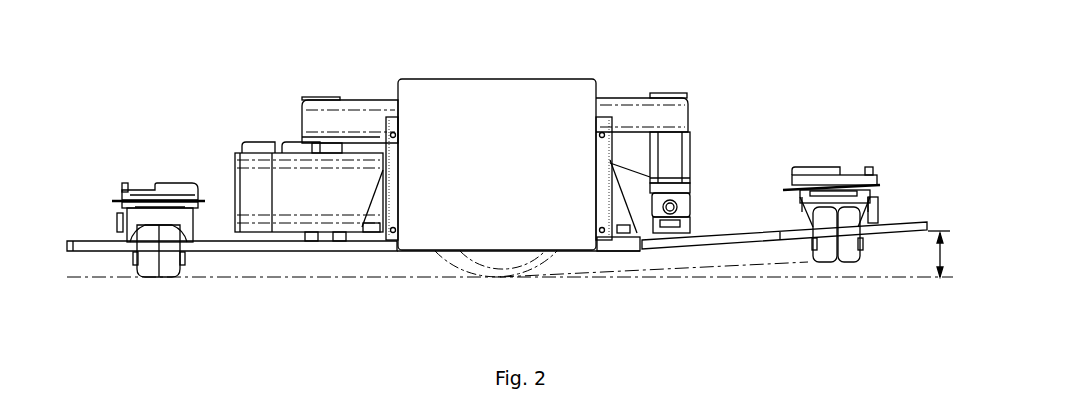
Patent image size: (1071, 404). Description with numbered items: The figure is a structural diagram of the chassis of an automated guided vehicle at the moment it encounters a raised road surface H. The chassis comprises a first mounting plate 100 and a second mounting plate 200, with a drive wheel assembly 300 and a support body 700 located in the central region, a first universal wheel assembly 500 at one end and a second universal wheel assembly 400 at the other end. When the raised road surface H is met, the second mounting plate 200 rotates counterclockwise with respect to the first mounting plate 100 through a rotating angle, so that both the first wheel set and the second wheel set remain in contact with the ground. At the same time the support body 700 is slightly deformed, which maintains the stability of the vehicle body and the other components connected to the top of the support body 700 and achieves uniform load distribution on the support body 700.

The first mounting plate 100 is at (353, 288).
The second mounting plate 200 is at (784, 171).
The drive wheel assembly 300 is at (518, 152).
The second universal wheel assembly 400 is at (860, 176).
The first universal wheel assembly 500 is at (132, 184).
The support body 700 is at (678, 130).
The raised road surface H is at (661, 298).